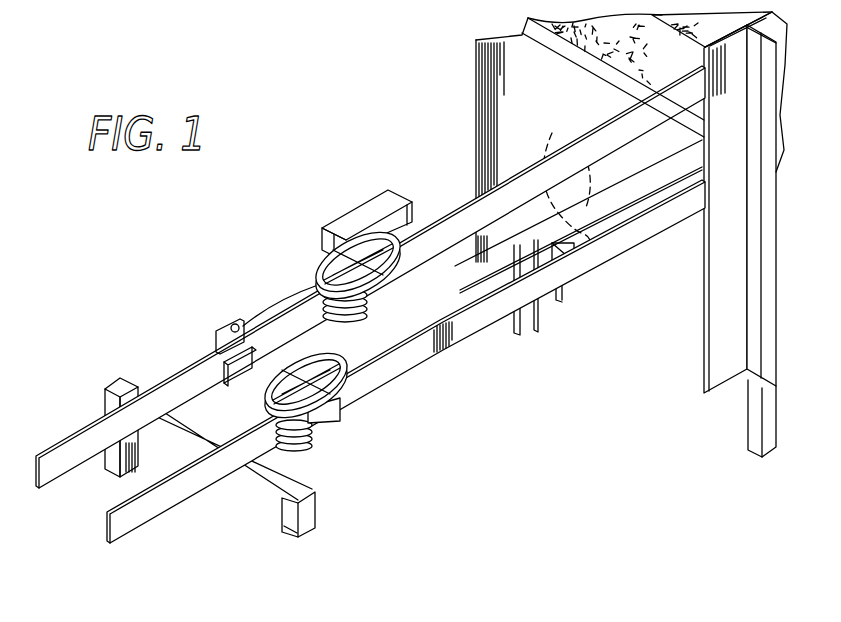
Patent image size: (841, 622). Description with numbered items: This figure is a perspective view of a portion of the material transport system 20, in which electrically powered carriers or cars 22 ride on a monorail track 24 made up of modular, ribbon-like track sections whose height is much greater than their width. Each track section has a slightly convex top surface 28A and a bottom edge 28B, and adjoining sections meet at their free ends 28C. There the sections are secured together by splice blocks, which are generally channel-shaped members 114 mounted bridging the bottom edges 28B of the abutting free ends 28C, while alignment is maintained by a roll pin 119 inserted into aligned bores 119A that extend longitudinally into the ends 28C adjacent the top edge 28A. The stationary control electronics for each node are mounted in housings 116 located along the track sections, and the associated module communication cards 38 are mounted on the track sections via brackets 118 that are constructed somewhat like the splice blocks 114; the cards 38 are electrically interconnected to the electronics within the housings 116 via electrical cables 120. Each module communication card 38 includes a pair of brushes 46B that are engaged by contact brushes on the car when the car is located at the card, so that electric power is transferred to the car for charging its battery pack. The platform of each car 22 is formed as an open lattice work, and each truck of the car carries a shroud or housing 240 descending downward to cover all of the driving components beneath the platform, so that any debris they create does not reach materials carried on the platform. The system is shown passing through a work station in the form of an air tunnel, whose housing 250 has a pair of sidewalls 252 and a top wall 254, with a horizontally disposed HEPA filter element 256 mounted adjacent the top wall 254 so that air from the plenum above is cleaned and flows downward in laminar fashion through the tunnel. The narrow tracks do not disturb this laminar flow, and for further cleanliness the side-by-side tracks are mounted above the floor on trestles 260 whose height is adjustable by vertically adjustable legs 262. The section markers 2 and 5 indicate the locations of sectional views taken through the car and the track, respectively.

The section line 2- 2 is at (352, 357).
The section line 5- 5 is at (450, 60).
The material transport system 20 is at (437, 438).
The carrier 22 is at (410, 291).
The monorail track 24 is at (103, 520).
The top surface 28A is at (498, 165).
The bottom edge 28B is at (537, 207).
The free end 28C is at (585, 258).
The module communication card 38 is at (215, 332).
The brushes 46B is at (238, 320).
The splice block 114 is at (566, 285).
The housing 116 is at (390, 192).
The bracket 118 is at (222, 366).
The roll pin 119 is at (571, 171).
The bore 119A is at (530, 153).
The electrical cable 120 is at (312, 268).
The shroud 240 is at (405, 245).
The housing 250 is at (726, 342).
The sidewall 252 is at (712, 214).
The top wall 254 is at (598, 58).
The HEPA filter element 256 is at (618, 82).
The trestle 260 is at (296, 484).
The vertically adjustable leg 262 is at (294, 522).